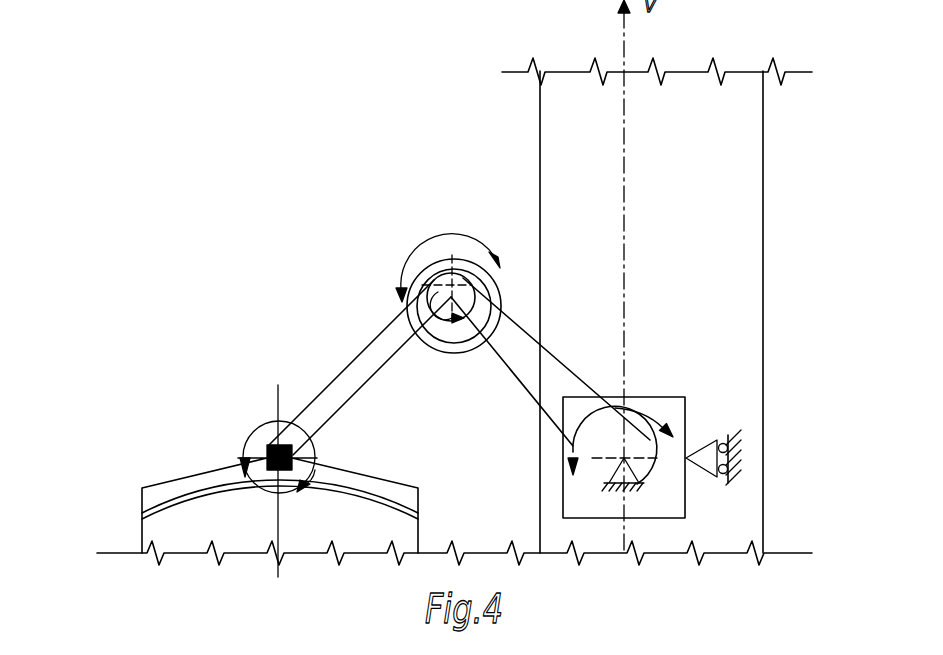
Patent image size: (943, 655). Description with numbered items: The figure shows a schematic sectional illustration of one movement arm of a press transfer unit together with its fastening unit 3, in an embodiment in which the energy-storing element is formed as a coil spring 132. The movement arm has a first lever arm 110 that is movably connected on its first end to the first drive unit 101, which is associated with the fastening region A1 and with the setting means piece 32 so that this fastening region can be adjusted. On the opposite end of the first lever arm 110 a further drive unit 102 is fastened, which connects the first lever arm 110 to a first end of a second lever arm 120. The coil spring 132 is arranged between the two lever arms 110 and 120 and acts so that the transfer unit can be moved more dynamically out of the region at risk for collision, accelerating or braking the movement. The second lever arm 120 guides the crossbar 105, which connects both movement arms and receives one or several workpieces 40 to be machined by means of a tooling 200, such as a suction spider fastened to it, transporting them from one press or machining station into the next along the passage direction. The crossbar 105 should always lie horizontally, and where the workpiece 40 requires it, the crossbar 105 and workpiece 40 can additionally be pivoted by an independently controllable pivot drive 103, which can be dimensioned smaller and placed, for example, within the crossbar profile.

The fastening unit 3 is at (728, 320).
The setting means piece 32 is at (672, 413).
The first drive unit 101 is at (572, 448).
The fastening region A1 is at (623, 460).
The further drive unit 102 is at (430, 238).
The coil spring 132 is at (462, 350).
The second lever arm 120 is at (352, 380).
The first lever arm 110 is at (548, 385).
The workpiece 40 is at (143, 505).
The tooling 200 is at (165, 497).
The pivot drive 103 is at (250, 440).
The crossbar 105 is at (262, 440).